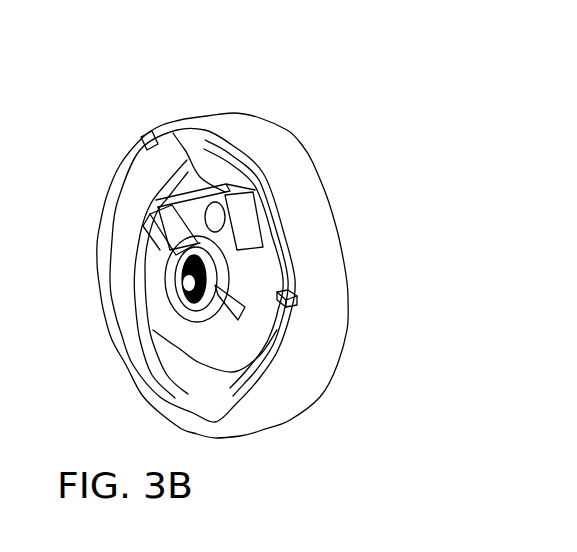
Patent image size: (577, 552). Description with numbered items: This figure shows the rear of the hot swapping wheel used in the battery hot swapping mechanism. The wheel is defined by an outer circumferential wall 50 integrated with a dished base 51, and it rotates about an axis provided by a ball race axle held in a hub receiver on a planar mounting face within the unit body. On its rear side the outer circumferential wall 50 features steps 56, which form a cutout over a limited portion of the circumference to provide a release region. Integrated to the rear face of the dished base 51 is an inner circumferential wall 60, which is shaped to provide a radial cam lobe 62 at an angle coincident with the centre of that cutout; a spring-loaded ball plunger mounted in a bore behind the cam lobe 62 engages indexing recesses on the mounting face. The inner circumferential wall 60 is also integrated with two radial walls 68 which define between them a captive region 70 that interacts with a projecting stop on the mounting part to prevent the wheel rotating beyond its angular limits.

The outer circumferential wall 50 is at (230, 128).
The dished base 51 is at (237, 388).
The steps 56 is at (156, 131).
The inner circumferential wall 60 is at (150, 322).
The radial cam lobe 62 is at (240, 188).
The radial walls 68 is at (168, 229).
The captive region 70 is at (228, 336).